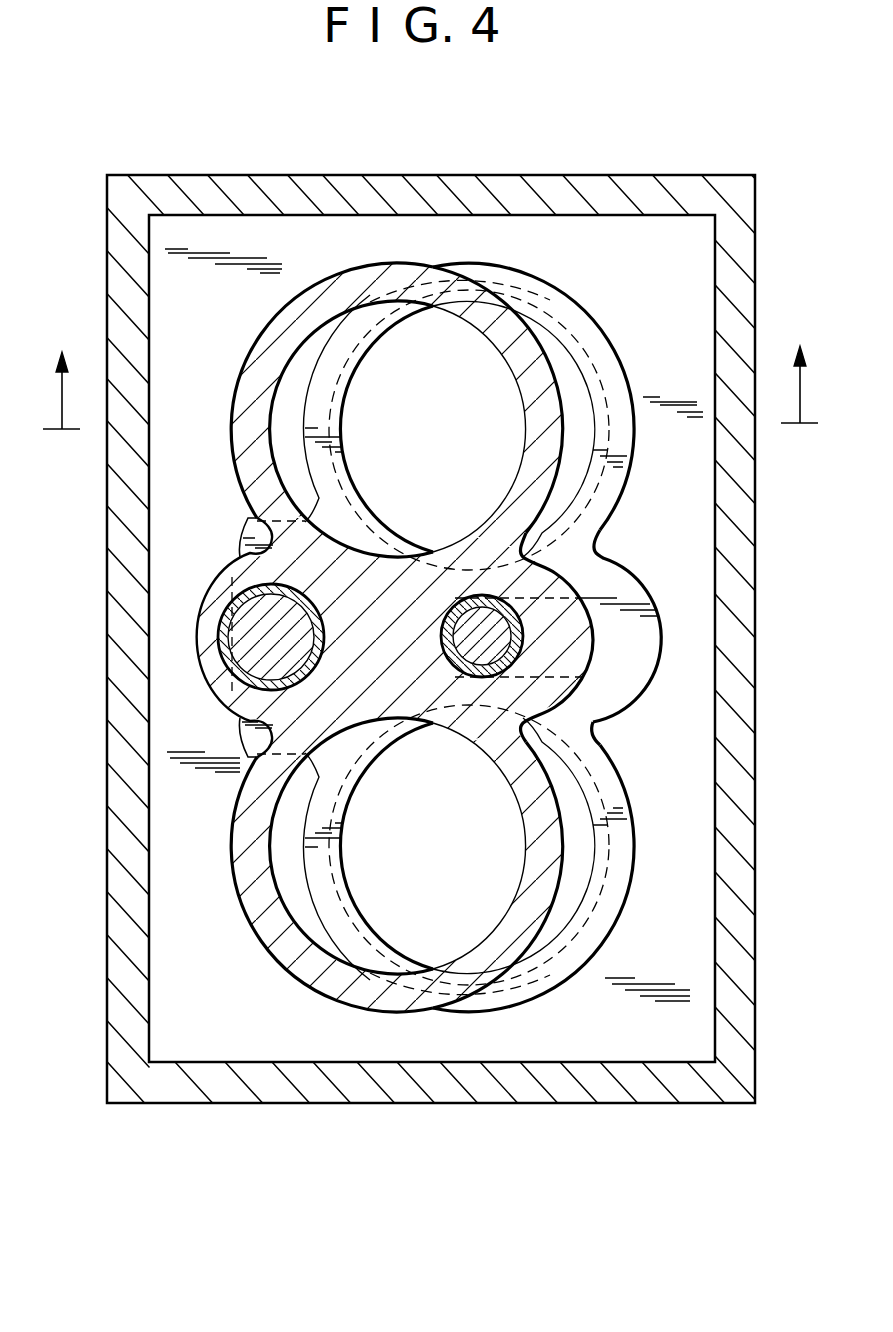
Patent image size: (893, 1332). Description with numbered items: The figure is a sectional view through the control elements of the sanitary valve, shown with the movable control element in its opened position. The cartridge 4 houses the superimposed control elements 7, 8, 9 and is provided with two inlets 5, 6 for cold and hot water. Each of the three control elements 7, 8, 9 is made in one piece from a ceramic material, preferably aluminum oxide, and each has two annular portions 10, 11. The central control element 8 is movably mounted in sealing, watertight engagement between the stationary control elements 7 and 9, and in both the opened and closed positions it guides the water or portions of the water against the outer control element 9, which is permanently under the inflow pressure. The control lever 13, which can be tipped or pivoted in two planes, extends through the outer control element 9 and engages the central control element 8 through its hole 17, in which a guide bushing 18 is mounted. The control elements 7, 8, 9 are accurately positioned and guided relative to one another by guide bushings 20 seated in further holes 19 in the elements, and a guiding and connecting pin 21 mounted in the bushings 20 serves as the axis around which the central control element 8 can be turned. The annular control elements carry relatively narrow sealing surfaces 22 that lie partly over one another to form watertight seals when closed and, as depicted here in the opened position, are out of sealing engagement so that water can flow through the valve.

The cartridge 4 is at (447, 1104).
The inlet 5 is at (465, 928).
The inlet 6 is at (460, 498).
The control element 7 is at (583, 328).
The central control element 8 is at (289, 328).
The outer control element 9 is at (430, 409).
The annular portion 10 is at (348, 268).
The annular portion 11 is at (298, 983).
The control lever 13 is at (232, 648).
The hole 17 is at (233, 633).
The guide bushing 18 is at (222, 634).
The hole 19 is at (598, 726).
The guide bushing 20 is at (548, 583).
The guiding and connecting pin 21 is at (513, 648).
The sealing surface 22 is at (622, 596).